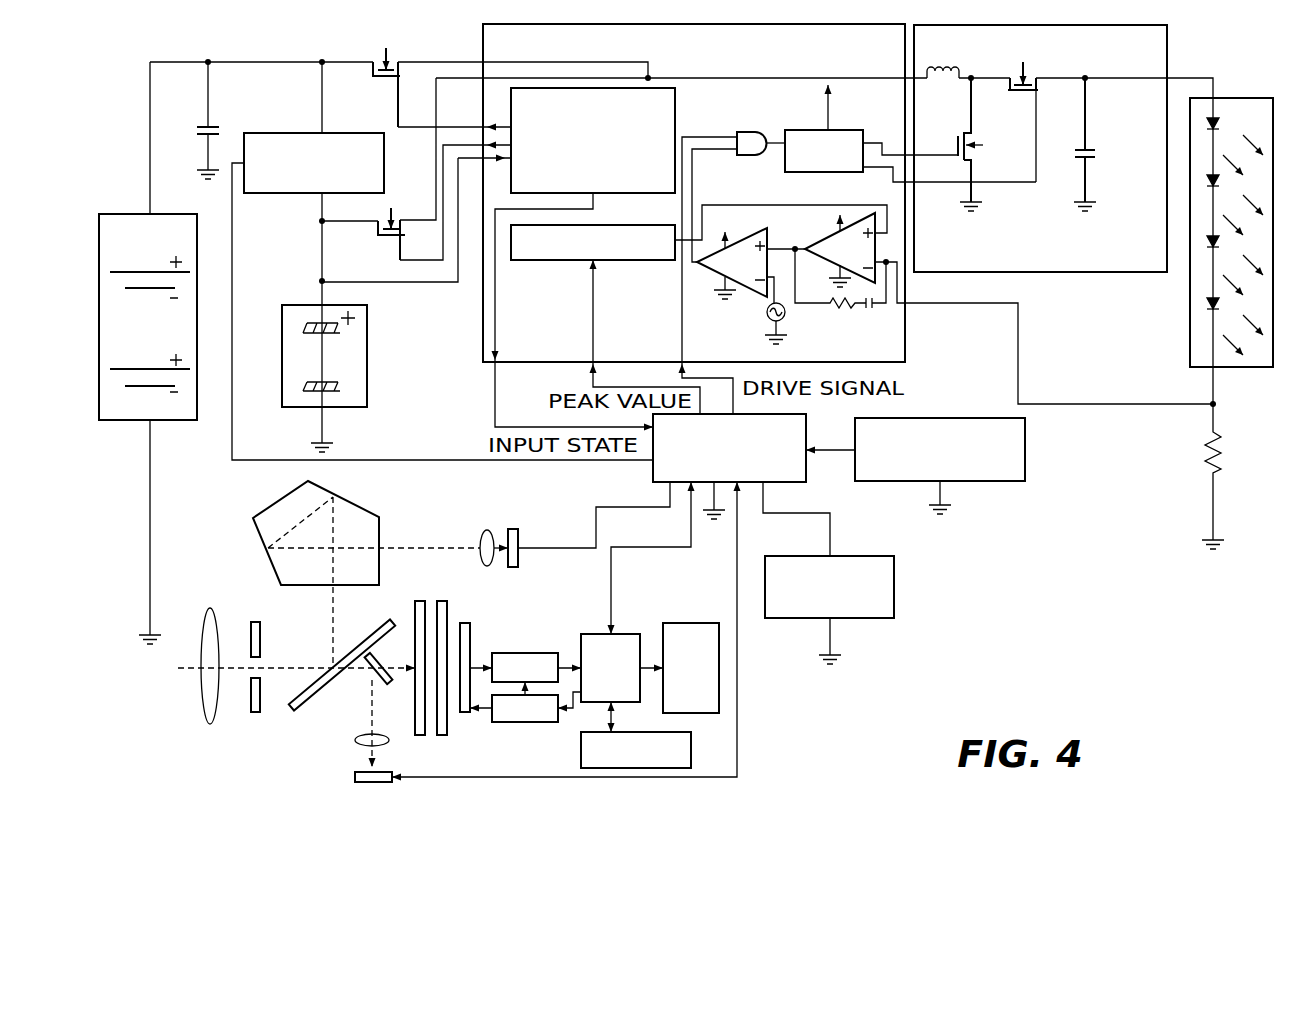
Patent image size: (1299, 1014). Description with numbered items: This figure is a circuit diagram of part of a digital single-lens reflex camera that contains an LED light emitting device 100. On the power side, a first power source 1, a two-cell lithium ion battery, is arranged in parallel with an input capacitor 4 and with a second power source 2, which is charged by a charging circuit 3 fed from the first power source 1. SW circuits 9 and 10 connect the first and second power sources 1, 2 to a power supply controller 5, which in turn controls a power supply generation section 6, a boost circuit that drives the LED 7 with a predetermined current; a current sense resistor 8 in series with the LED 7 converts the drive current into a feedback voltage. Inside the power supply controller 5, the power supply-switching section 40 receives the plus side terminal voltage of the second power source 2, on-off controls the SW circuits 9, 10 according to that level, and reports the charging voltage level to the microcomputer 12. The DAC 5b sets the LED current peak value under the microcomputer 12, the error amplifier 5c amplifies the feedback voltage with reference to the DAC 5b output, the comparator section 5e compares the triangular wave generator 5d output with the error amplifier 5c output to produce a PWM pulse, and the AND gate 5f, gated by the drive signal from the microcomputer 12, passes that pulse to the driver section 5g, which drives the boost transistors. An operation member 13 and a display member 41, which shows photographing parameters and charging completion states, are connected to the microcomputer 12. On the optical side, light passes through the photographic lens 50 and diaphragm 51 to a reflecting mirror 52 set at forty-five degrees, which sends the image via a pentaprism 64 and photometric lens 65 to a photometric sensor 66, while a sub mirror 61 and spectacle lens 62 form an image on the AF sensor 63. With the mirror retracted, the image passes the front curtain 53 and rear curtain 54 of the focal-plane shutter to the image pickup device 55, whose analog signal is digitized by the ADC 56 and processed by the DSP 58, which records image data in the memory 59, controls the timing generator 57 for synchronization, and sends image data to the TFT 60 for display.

The first power source 1 is at (125, 214).
The second power source 2 is at (293, 305).
The charging circuit 3 is at (290, 133).
The input capacitor 4 is at (196, 130).
The power supply controller 5 is at (483, 33).
The digital-to-analog converter (DAC) 5b is at (533, 260).
The error amplifier (AMP) 5c is at (828, 240).
The triangular wave generator 5d is at (785, 312).
The comparator section (CMP) 5e is at (745, 290).
The AND gate 5f is at (748, 155).
The driver section (Driver) 5g is at (838, 130).
The power supply generation section 6 is at (1167, 28).
The LED 7 is at (1190, 322).
The current sense resistor 8 is at (1203, 462).
The switching (SW) circuit 9 is at (380, 60).
The switching (SW) circuit 10 is at (393, 210).
The control microcomputer 12 is at (806, 470).
The operation member (mode dial) 13 is at (1025, 448).
The power supply-switching section 40 is at (675, 113).
The display member 41 is at (894, 585).
The photographic lens 50 is at (210, 607).
The diaphragm 51 is at (255, 620).
The reflecting mirror 52 is at (360, 648).
The front curtain 53 is at (420, 601).
The rear curtain 54 is at (442, 735).
The image pickup device 55 is at (465, 623).
The analog-to-digital converter (ADC) 56 is at (525, 653).
The timing generator (TG) 57 is at (525, 722).
The digital signal processor (DSP) 58 is at (590, 634).
The memory 59 is at (581, 755).
The TFT (thin-film transistor display) 60 is at (693, 623).
The sub mirror 61 is at (374, 686).
The spectacle lens 62 is at (355, 740).
The AF sensor 63 is at (355, 777).
The pentaprism 64 is at (357, 508).
The photometric lens 65 is at (487, 530).
The photometric sensor 66 is at (513, 529).
The light emitting device 100 is at (1087, 640).